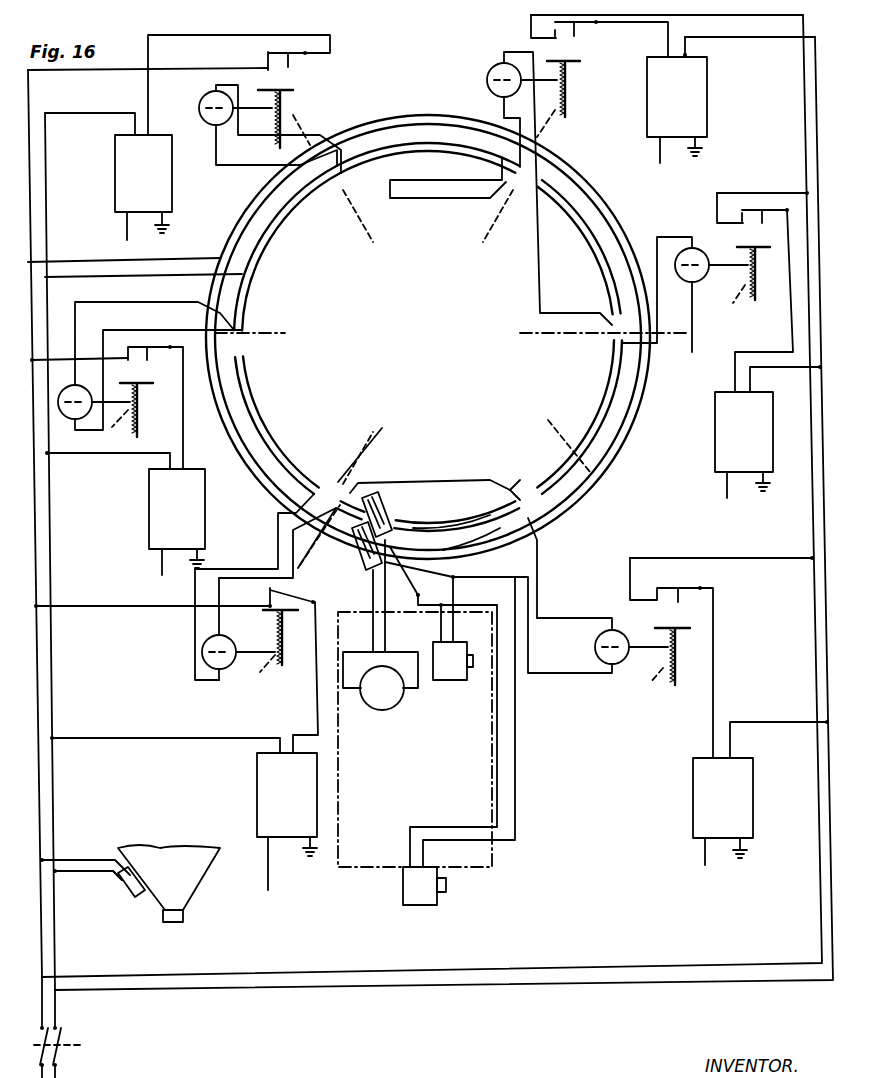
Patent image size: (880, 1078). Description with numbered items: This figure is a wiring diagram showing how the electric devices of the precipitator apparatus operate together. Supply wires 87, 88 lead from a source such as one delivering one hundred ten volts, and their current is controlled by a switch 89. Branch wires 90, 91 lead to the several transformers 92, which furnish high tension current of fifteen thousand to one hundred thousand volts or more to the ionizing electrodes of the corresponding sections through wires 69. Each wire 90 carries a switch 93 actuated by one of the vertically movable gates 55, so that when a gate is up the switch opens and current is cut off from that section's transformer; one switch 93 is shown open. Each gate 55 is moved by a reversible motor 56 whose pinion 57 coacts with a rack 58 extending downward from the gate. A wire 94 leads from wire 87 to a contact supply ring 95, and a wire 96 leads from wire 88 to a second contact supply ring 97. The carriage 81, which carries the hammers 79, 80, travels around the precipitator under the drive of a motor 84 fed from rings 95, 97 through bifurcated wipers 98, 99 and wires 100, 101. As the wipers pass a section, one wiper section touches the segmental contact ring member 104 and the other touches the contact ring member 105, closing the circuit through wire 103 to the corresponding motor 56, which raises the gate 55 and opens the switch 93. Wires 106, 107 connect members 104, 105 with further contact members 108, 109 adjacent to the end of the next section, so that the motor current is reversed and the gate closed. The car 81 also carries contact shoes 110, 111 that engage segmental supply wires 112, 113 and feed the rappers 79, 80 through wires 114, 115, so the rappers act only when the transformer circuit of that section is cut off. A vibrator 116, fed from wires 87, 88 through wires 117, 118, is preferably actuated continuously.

The gate 55 is at (292, 88).
The motor 56 is at (200, 110).
The pinion 57 is at (272, 110).
The rack 58 is at (286, 114).
The wire 69 is at (125, 226).
The hammer 79 is at (452, 680).
The hammer 80 is at (424, 905).
The carriage 81 is at (374, 868).
The motor 84 is at (386, 708).
The supply wire 87 is at (42, 772).
The supply wire 88 is at (55, 794).
The switch 89 is at (70, 1052).
The branch wire 90 is at (286, 977).
The branch wire 91 is at (290, 990).
The transformer 92 is at (116, 182).
The switch 93 is at (310, 60).
The wire 94 is at (110, 260).
The contact supply ring 95 is at (222, 243).
The wire 96 is at (90, 276).
The contact supply ring 97 is at (250, 296).
The wiper 98 is at (358, 568).
The wiper 99 is at (388, 500).
The wire 100 is at (372, 646).
The wire 101 is at (384, 648).
The wire 103 is at (236, 568).
The segmental contact ring member 104 is at (352, 470).
The contact ring member 105 is at (312, 535).
The wire 106 is at (276, 542).
The wire 107 is at (455, 486).
The contact member 108 is at (512, 484).
The contact member 109 is at (494, 532).
The contact shoe 110 is at (428, 590).
The contact shoe 111 is at (440, 560).
The segmental supply wire 112 is at (500, 550).
The segmental supply wire 113 is at (432, 524).
The wire 114 is at (516, 706).
The wire 115 is at (500, 738).
The vibrator 116 is at (138, 898).
The wire 117 is at (84, 858).
The wire 118 is at (70, 876).